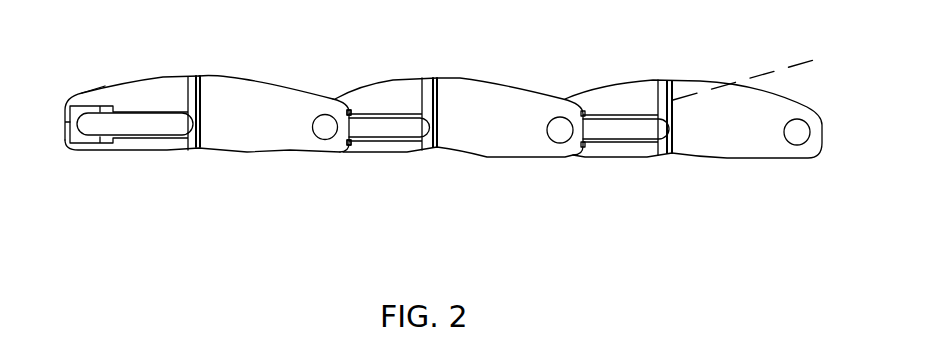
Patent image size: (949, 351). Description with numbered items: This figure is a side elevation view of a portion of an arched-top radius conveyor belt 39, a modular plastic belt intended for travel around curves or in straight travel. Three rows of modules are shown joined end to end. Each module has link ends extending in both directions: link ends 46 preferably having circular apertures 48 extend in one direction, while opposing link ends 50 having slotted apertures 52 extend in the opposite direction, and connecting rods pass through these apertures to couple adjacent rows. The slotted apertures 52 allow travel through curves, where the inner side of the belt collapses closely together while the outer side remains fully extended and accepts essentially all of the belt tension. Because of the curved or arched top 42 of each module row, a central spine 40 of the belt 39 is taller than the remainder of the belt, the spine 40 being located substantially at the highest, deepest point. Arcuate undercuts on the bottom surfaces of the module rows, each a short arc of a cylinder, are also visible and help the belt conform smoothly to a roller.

The conveyor belt 39 is at (848, 97).
The central spine 40 is at (759, 71).
The curved or arched top 42 is at (686, 80).
The link ends 46 is at (273, 95).
The circular apertures 48 is at (320, 129).
The opposing link ends 50 is at (105, 95).
The slotted apertures 52 is at (160, 126).